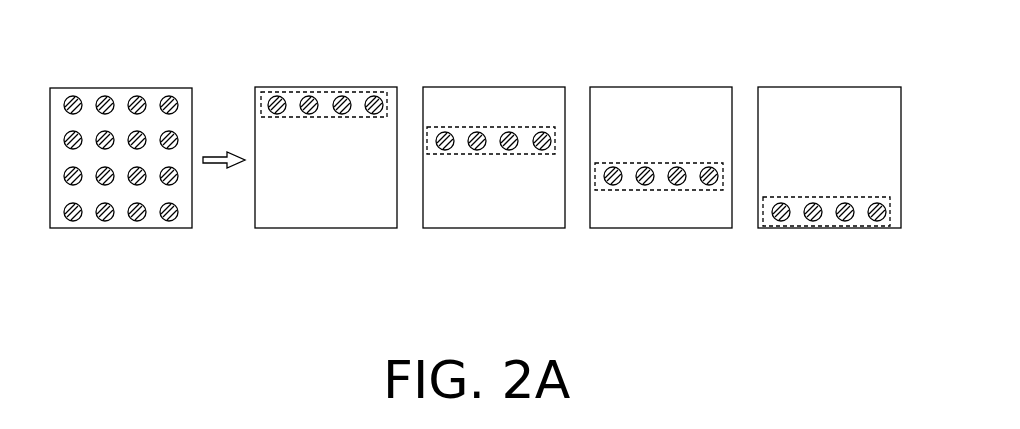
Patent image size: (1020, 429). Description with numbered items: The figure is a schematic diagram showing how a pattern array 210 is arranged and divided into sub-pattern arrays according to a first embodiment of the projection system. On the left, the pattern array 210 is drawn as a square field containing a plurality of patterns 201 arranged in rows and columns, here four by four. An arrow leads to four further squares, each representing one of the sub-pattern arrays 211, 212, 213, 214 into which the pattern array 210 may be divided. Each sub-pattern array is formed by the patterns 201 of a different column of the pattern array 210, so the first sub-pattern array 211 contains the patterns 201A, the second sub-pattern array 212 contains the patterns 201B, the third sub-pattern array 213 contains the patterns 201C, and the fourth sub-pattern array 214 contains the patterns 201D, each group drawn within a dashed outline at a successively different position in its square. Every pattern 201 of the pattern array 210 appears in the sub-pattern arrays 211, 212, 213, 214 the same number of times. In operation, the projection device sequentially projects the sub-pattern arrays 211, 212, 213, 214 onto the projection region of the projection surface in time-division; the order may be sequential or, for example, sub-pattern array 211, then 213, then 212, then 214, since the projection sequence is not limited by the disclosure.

The pattern 201 is at (72, 94).
The pattern array 210 is at (119, 125).
The pattern 201A is at (277, 97).
The sub-pattern array 211 is at (320, 68).
The pattern 201B is at (444, 133).
The sub-pattern array 212 is at (487, 90).
The pattern 201C is at (615, 184).
The sub-pattern array 213 is at (655, 226).
The pattern 201D is at (782, 221).
The sub-pattern array 214 is at (823, 250).